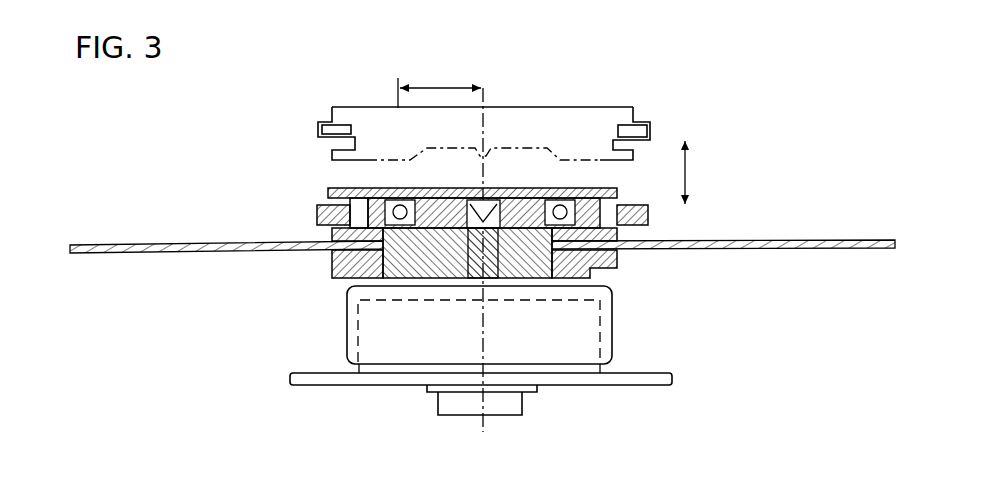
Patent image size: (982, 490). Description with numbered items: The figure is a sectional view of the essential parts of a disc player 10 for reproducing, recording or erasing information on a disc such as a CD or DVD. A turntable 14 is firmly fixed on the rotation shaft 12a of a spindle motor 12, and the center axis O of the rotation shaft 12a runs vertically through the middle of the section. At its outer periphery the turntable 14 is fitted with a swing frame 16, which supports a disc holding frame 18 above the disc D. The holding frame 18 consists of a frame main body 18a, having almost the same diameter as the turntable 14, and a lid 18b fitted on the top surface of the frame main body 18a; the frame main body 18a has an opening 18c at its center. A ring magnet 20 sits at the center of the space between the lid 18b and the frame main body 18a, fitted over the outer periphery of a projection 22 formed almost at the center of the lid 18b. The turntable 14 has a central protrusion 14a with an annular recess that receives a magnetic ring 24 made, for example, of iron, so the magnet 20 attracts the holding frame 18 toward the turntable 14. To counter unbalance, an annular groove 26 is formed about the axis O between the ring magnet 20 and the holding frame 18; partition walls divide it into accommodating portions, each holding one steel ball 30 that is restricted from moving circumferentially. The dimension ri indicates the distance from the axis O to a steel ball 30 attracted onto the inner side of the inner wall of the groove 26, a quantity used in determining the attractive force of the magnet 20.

The disc player 10 is at (156, 129).
The spindle motor 12 is at (608, 328).
The rotation shaft 12a is at (476, 268).
The turntable 14 is at (362, 272).
The protrusion 14a is at (537, 268).
The swing frame 16 is at (320, 214).
The disc holding frame 18 is at (581, 183).
The frame main body 18a is at (633, 237).
The lid 18b is at (632, 199).
The opening 18c is at (428, 268).
The ring magnet 20 is at (447, 185).
The projection 22 is at (495, 190).
The magnetic ring 24 is at (506, 268).
The annular groove 26 is at (345, 193).
The steel ball 30 is at (398, 200).
The disk D is at (825, 249).
The center axis O is at (487, 100).
The distance between steel ball and axis when attracted inward ri is at (439, 85).